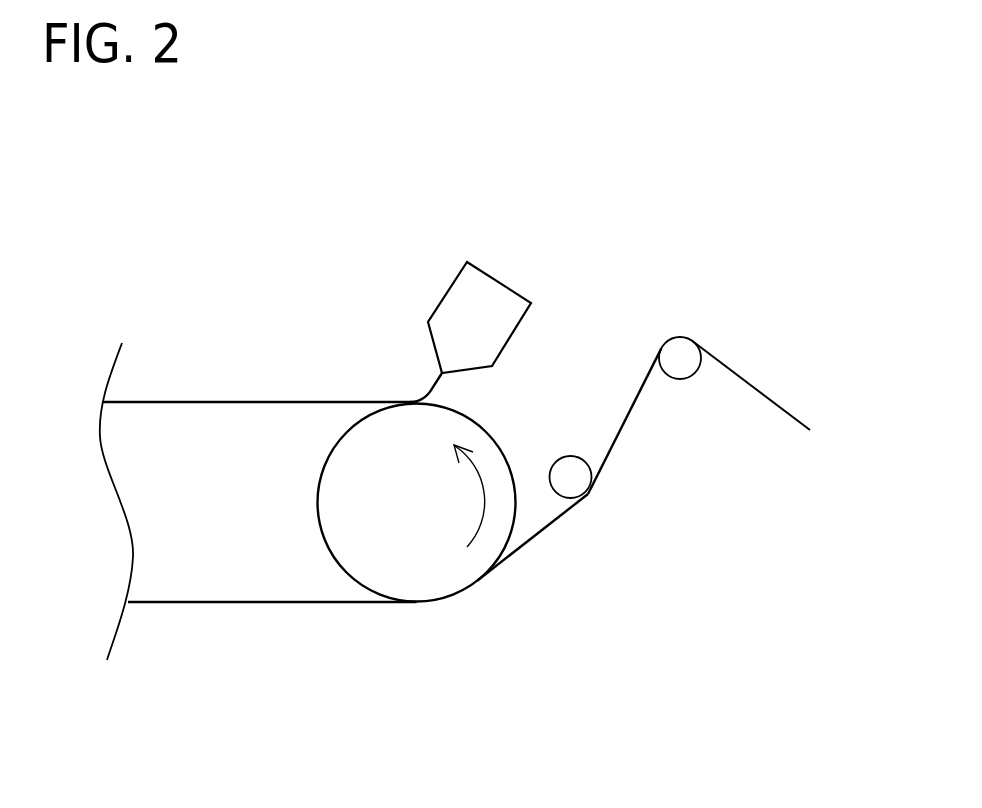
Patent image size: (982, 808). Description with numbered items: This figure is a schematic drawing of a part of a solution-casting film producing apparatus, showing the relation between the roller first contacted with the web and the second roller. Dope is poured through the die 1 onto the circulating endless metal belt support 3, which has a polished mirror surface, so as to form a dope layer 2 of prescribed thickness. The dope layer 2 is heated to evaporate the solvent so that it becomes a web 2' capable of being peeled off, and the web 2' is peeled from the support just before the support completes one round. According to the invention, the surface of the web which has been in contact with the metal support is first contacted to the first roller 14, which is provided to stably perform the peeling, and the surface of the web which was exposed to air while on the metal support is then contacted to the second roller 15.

The die 1 is at (488, 295).
The dope layer 2 is at (272, 344).
The web 2' is at (533, 605).
The endless metal belt support 3 is at (486, 427).
The first roller 14 is at (574, 486).
The second roller 15 is at (678, 352).